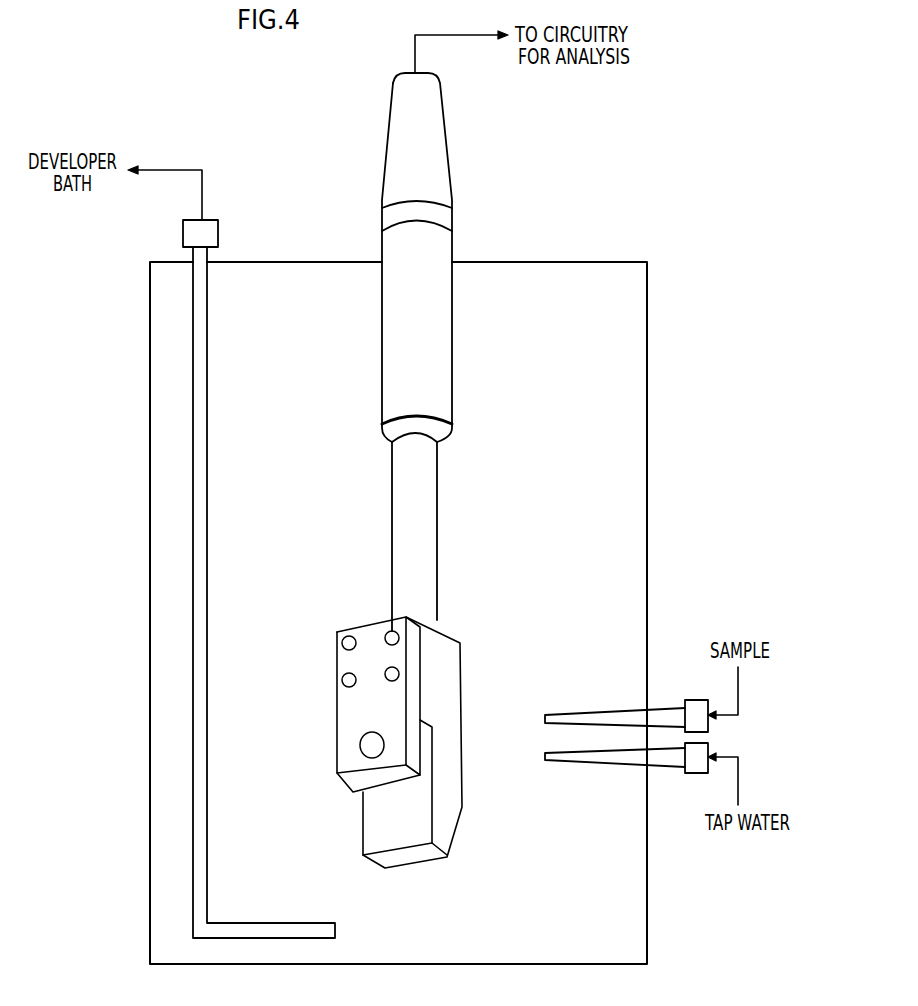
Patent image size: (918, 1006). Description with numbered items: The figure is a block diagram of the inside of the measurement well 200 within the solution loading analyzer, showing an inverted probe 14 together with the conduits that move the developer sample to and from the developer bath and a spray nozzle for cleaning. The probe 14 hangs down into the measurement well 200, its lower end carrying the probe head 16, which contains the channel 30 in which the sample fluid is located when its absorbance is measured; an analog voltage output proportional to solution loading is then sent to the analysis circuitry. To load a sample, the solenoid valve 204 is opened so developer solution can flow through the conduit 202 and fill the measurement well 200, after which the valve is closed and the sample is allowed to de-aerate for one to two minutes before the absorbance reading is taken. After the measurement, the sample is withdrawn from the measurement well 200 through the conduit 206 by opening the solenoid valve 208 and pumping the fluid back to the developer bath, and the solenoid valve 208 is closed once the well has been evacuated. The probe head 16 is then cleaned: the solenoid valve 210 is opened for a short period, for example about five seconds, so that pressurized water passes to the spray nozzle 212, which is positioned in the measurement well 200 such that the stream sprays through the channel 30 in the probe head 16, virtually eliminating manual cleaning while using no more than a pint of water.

The probe 14 is at (472, 207).
The probe head 16 is at (347, 705).
The channel 30 is at (348, 804).
The measurement well 200 is at (617, 943).
The conduit 202 is at (602, 690).
The solenoid valve 204 is at (704, 690).
The conduit 206 is at (202, 663).
The solenoid valve 208 is at (218, 239).
The solenoid valve 210 is at (703, 777).
The spray nozzle 212 is at (605, 767).